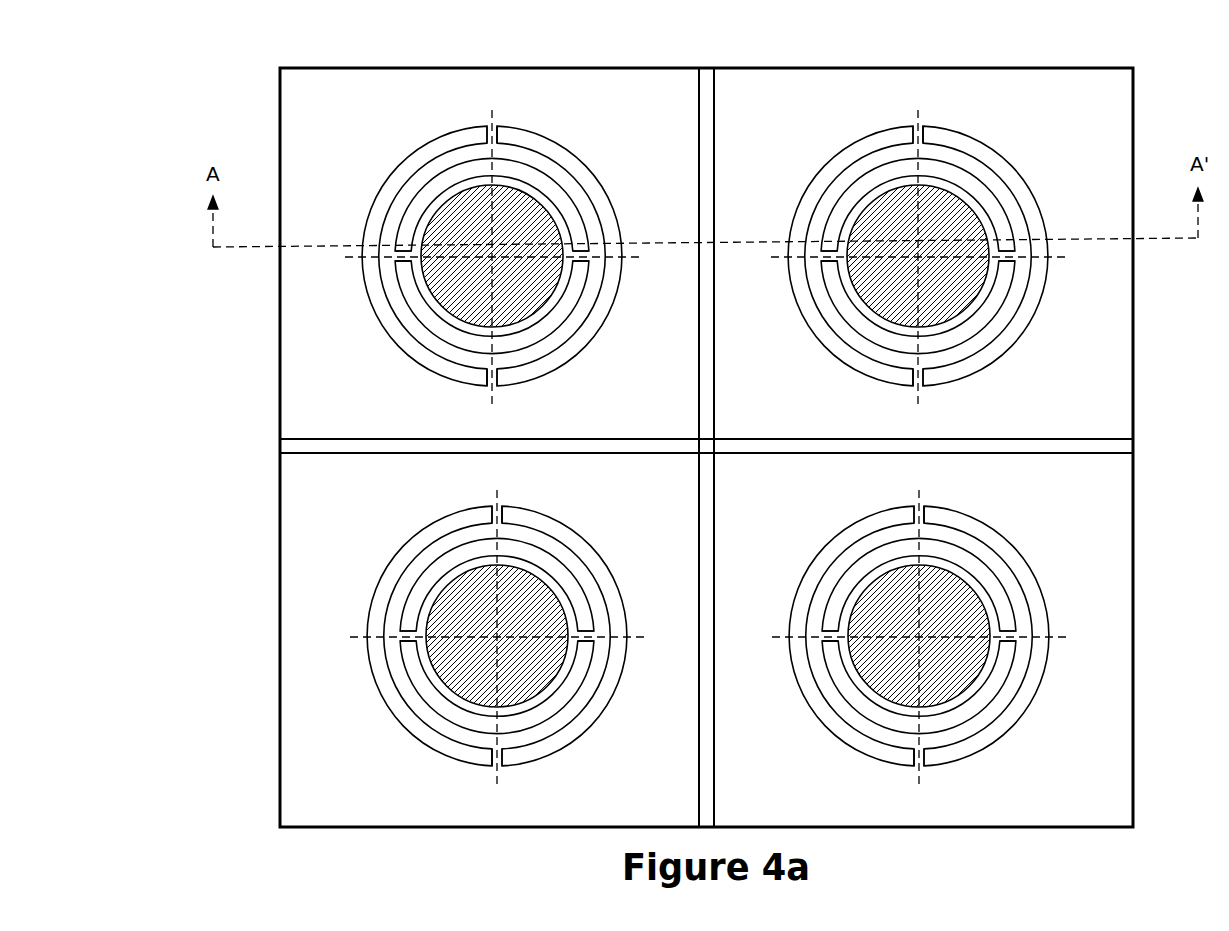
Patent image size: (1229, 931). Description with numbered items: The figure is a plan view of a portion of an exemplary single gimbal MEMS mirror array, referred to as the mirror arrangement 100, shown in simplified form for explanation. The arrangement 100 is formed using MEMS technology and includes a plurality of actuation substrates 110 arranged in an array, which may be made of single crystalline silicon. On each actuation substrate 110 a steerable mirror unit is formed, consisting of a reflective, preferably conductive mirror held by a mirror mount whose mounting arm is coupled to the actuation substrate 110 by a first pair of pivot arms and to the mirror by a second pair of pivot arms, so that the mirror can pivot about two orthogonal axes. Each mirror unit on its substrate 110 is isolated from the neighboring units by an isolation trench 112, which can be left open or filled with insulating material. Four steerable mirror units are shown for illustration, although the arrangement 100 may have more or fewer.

The mirror arrangement 100 is at (275, 102).
The actuation substrate 110 is at (706, 447).
The isolation trench 112 is at (707, 98).